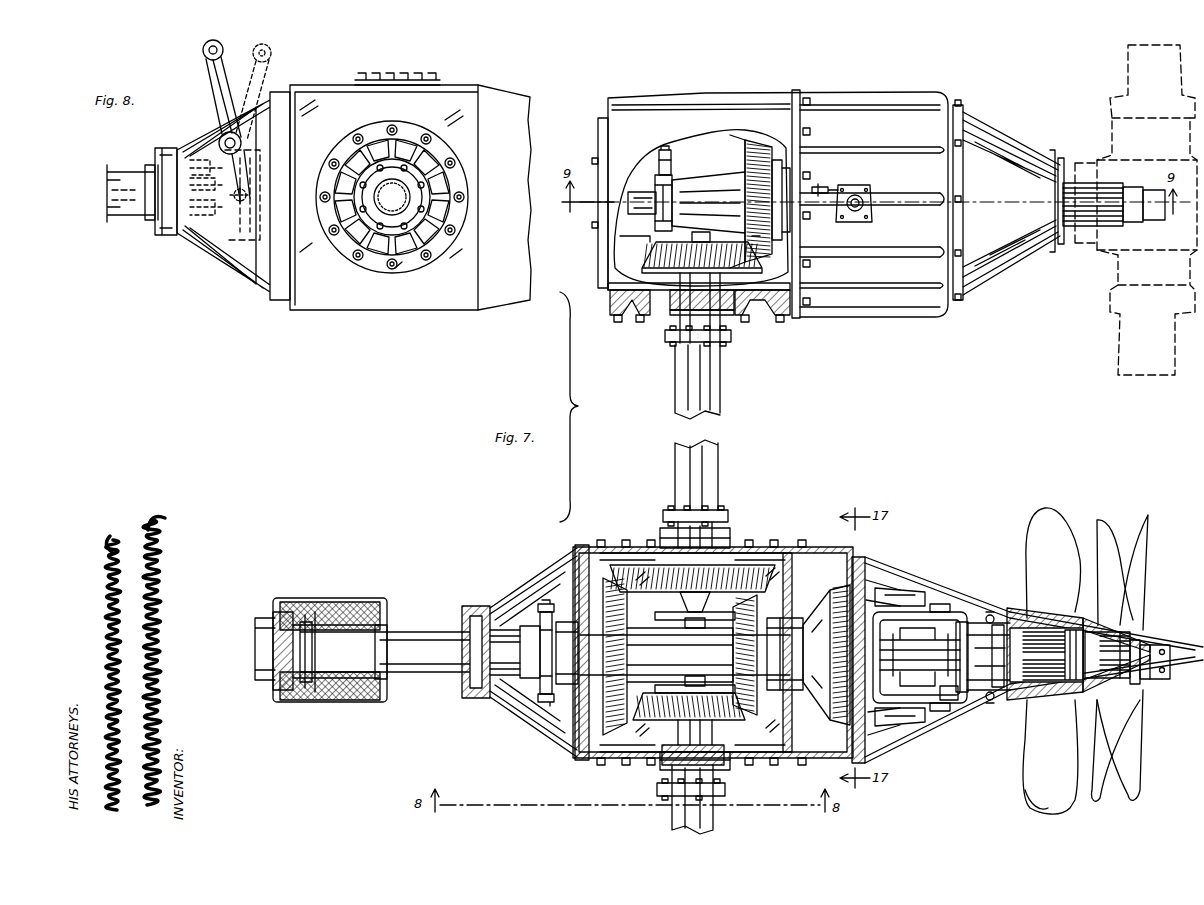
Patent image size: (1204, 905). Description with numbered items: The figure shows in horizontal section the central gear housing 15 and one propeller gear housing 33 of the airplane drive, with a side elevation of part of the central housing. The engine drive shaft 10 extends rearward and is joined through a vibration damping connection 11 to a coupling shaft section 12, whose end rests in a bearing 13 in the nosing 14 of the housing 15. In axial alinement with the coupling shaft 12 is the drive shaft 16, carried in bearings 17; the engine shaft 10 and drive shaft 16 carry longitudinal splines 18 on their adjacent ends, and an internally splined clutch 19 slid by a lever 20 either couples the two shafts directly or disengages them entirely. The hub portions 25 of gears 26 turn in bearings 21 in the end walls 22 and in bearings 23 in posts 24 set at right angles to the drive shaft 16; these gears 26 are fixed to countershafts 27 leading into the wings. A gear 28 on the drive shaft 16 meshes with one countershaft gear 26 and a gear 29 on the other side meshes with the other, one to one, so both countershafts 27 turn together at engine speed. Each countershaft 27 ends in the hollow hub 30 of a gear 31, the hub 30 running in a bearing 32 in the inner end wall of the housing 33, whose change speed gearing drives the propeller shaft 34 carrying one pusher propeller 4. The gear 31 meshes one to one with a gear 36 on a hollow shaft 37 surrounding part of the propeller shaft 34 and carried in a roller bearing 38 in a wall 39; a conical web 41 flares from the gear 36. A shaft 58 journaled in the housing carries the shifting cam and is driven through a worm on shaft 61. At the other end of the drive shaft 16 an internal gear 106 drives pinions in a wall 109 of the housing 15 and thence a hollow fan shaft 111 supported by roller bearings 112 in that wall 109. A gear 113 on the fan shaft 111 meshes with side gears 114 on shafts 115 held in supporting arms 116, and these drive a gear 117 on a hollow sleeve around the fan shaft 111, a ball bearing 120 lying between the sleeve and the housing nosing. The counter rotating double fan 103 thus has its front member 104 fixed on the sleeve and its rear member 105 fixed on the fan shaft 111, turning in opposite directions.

In FIG. 7, the pusher propeller 4 is at (1108, 302).
In FIG. 7, the engine drive shaft 10 is at (268, 618).
In FIG. 7, the vibration damping connection 11 is at (340, 598).
In FIG. 8, the coupling shaft section 12 is at (128, 214).
In FIG. 7, the coupling shaft section 12 is at (416, 661).
In FIG. 8, the bearing 13 is at (183, 238).
In FIG. 7, the bearing 13 is at (482, 700).
In FIG. 8, the nosing 14 is at (238, 256).
In FIG. 7, the nosing 14 is at (525, 716).
In FIG. 8, the housing 15 is at (341, 279).
In FIG. 7, the housing 15 is at (604, 748).
In FIG. 8, the drive shaft 16 is at (214, 39).
In FIG. 7, the drive shaft 16 is at (652, 640).
In FIG. 7, the bearings 17 is at (572, 668).
In FIG. 8, the longitudinal splines 18 is at (207, 226).
In FIG. 7, the longitudinal splines 18 is at (516, 678).
In FIG. 8, the internally splined clutch 19 is at (250, 193).
In FIG. 7, the internally splined clutch 19 is at (544, 694).
In FIG. 8, the lever 20 is at (215, 100).
In FIG. 7, the lever 20 is at (547, 604).
In FIG. 7, the bearings 21 is at (726, 548).
In FIG. 8, the end walls 22 is at (378, 274).
In FIG. 7, the end walls 22 is at (763, 553).
In FIG. 7, the bearings 23 is at (706, 620).
In FIG. 7, the posts 24 is at (666, 615).
In FIG. 7, the hub portions 25 is at (712, 609).
In FIG. 7, the gears 26 is at (640, 566).
In FIG. 8, the countershafts 27 is at (403, 220).
In FIG. 7, the countershafts 27 is at (712, 440).
In FIG. 7, the gear 28 is at (618, 756).
In FIG. 7, the gear 29 is at (842, 560).
In FIG. 7, the hollow hub 30 is at (700, 325).
In FIG. 7, the gear 31 is at (652, 250).
In FIG. 7, the bearing 32 is at (736, 310).
In FIG. 7, the housing 33 is at (893, 118).
In FIG. 7, the propeller shaft 34 is at (645, 196).
In FIG. 7, the gear 36 is at (760, 142).
In FIG. 7, the hollow shaft 37 is at (702, 182).
In FIG. 7, the roller bearing 38 is at (673, 180).
In FIG. 7, the wall 39 is at (665, 147).
In FIG. 7, the conical web 41 is at (778, 210).
In FIG. 7, the shaft 58 is at (858, 210).
In FIG. 7, the worm shaft 61 is at (824, 188).
In FIG. 7, the counter rotating double fan 103 is at (1111, 507).
In FIG. 7, the front fan member 104 is at (1040, 700).
In FIG. 7, the rear fan member 105 is at (1122, 633).
In FIG. 7, the internal gear 106 is at (840, 585).
In FIG. 7, the housing wall 109 is at (880, 592).
In FIG. 7, the hollow fan shaft 111 is at (950, 704).
In FIG. 7, the roller bearings 112 is at (842, 654).
In FIG. 7, the gear 113 is at (900, 678).
In FIG. 7, the side gears 114 is at (952, 610).
In FIG. 7, the shafts 115 is at (938, 606).
In FIG. 7, the supporting arms 116 is at (878, 590).
In FIG. 7, the gear 117 is at (978, 614).
In FIG. 7, the ball bearing 120 is at (988, 702).